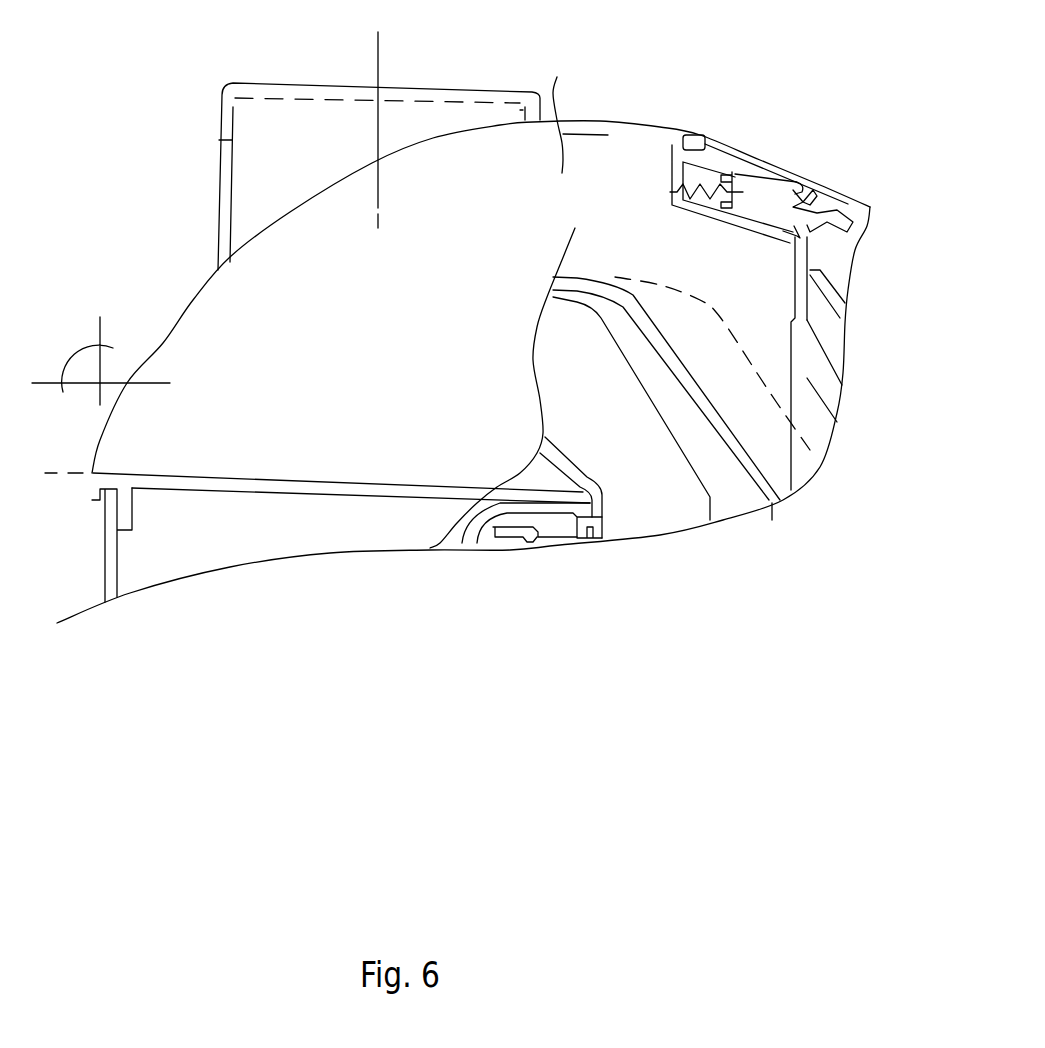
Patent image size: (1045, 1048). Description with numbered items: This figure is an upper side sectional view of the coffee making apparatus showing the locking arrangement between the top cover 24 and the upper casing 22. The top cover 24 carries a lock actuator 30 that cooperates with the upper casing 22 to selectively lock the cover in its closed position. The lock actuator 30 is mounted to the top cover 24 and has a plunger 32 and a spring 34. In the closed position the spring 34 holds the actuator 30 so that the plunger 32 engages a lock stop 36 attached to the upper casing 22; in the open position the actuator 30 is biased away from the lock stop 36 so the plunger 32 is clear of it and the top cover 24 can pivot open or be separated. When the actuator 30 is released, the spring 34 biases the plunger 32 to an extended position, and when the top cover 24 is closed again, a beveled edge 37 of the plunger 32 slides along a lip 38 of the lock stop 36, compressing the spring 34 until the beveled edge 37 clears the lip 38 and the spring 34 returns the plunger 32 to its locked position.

The upper casing 22 is at (860, 236).
The top cover 24 is at (278, 300).
The lock actuator 30 is at (763, 162).
The plunger 32 is at (754, 222).
The spring 34 is at (711, 225).
The lock stop 36 is at (781, 232).
The beveled edge 37 is at (797, 230).
The lip 38 is at (773, 225).